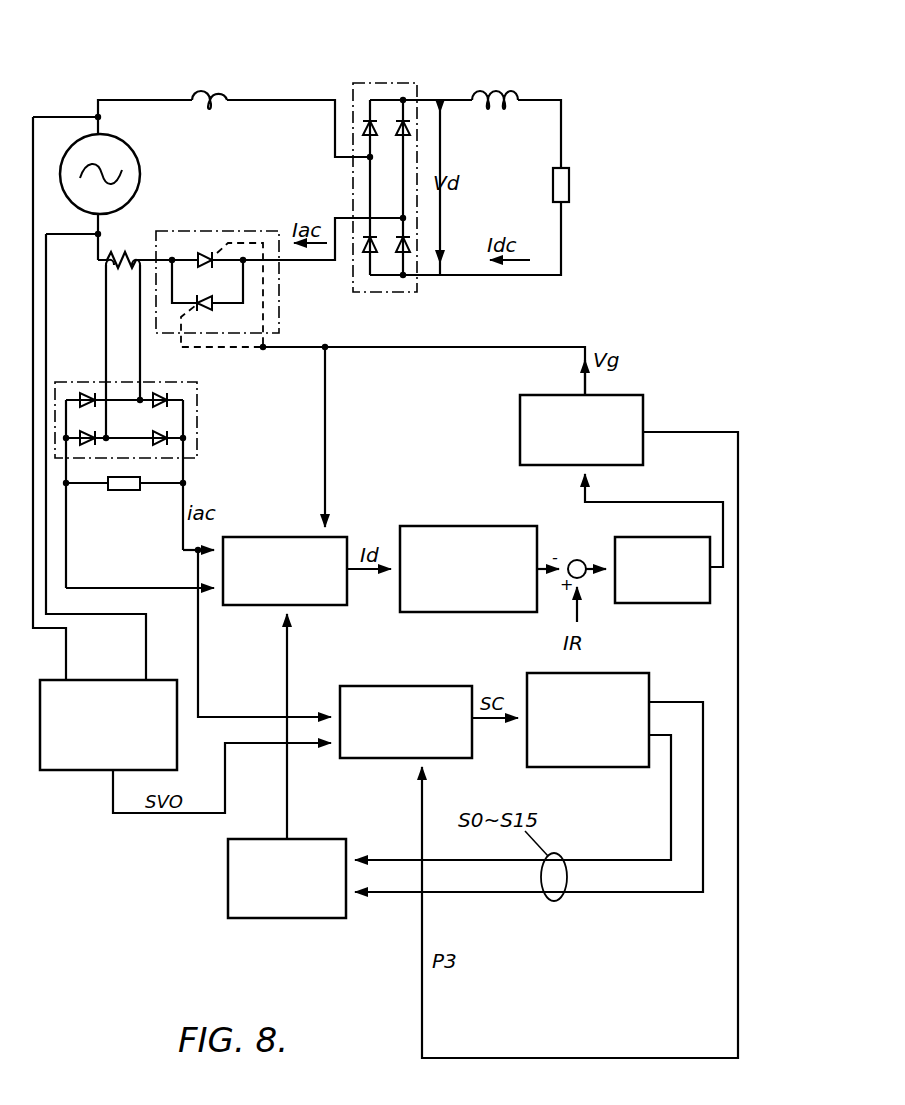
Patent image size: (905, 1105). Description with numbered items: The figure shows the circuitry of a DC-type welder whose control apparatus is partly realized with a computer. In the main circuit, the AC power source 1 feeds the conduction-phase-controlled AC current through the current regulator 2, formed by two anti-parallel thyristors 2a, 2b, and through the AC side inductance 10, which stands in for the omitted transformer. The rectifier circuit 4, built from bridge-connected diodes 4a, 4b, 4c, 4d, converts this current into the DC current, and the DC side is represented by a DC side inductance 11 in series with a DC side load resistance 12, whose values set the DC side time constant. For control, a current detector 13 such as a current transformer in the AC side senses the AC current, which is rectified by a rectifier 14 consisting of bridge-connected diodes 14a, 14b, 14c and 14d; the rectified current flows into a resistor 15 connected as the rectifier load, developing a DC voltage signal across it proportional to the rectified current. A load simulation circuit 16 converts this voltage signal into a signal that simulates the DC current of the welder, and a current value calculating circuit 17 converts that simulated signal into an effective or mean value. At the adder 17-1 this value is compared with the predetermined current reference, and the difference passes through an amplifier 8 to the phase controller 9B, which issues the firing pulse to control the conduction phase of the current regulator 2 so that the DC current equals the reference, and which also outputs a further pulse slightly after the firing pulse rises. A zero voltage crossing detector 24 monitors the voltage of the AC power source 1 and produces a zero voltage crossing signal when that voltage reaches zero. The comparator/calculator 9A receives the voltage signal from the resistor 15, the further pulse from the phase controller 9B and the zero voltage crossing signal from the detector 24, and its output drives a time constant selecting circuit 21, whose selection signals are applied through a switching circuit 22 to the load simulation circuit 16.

The AC power source 1 is at (138, 162).
The current regulator 2 is at (226, 222).
The thyristor 2a is at (205, 258).
The thyristor 2b is at (215, 305).
The rectifier circuit 4 is at (393, 70).
The rectifier diode 4a is at (366, 128).
The rectifier diode 4b is at (412, 129).
The rectifier diode 4c is at (405, 253).
The rectifier diode 4d is at (368, 252).
The amplifier 8 is at (660, 607).
The comparator/calculator 9A is at (398, 685).
The phase controller 9B is at (520, 418).
The AC side inductance 10 is at (219, 88).
The DC side inductance 11 is at (497, 90).
The DC side load resistance 12 is at (569, 186).
The current detector 13 is at (102, 256).
The rectifier 14 is at (228, 421).
The diode 14a is at (162, 400).
The diode 14b is at (162, 442).
The diode 14c is at (85, 401).
The diode 14d is at (84, 446).
The resistor 15 is at (120, 492).
The load simulation circuit 16 is at (270, 536).
The current value calculating circuit 17 is at (442, 525).
The adder 17-1 is at (575, 559).
The time constant selecting circuit 21 is at (589, 770).
The switching circuit 22 is at (276, 921).
The zero voltage crossing detector 24 is at (76, 772).